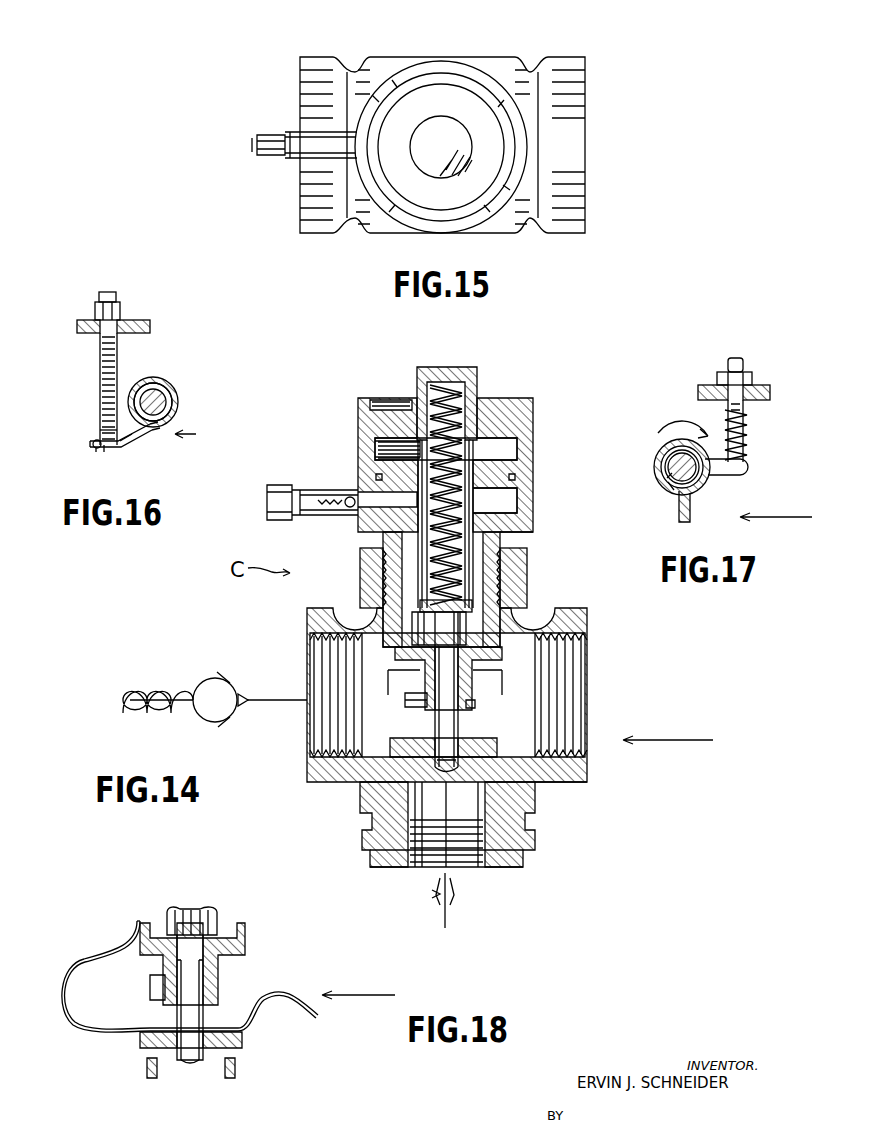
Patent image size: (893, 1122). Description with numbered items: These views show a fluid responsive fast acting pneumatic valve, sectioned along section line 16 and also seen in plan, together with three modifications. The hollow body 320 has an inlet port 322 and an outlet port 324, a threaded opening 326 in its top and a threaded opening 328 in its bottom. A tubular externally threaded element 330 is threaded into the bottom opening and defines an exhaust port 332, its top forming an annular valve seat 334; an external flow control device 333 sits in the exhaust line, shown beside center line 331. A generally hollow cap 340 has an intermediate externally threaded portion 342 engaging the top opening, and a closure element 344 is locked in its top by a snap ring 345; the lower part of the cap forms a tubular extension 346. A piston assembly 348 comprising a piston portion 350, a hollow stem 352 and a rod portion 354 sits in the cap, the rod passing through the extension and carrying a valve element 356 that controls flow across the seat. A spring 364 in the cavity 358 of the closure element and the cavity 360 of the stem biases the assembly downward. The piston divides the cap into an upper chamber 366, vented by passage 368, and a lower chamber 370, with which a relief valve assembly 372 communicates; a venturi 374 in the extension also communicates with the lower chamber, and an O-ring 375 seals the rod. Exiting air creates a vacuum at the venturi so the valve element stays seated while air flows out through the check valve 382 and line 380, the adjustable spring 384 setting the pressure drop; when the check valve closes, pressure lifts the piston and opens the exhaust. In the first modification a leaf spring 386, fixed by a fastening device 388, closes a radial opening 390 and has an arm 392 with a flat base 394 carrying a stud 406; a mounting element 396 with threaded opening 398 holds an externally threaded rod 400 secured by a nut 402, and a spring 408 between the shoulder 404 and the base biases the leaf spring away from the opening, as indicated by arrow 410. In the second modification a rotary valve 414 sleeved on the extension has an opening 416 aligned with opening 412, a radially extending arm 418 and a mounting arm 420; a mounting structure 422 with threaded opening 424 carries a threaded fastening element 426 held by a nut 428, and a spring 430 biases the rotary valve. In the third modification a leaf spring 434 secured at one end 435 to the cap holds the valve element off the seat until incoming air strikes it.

In FIG. 14, the section line 16— 16 is at (449, 688).
In FIG. 15, the hollow body 320 is at (580, 186).
In FIG. 14, the hollow body 320 is at (312, 609).
In FIG. 14, the inlet port 322 is at (590, 655).
In FIG. 14, the outlet port 324 is at (310, 642).
In FIG. 14, the threaded opening 326 is at (522, 573).
In FIG. 14, the threaded opening 328 is at (522, 825).
In FIG. 14, the tubular externally threaded element 330 is at (372, 855).
In FIG. 14, the center line 331 is at (440, 882).
In FIG. 14, the exhaust port 332 is at (478, 870).
In FIG. 14, the external flow control device 333 is at (440, 905).
In FIG. 18, the annular valve seat 334 is at (232, 1062).
In FIG. 14, the annular valve seat 334 is at (527, 785).
In FIG. 14, the hollow cap 340 is at (520, 540).
In FIG. 18, the intermediate externally threaded portion 342 is at (245, 943).
In FIG. 14, the intermediate externally threaded portion 342 is at (372, 565).
In FIG. 15, the closure element 344 is at (425, 118).
In FIG. 14, the closure element 344 is at (478, 395).
In FIG. 14, the snap ring 345 is at (378, 400).
In FIG. 15, the tubular extension 346 is at (448, 77).
In FIG. 16, the tubular extension 346 is at (175, 392).
In FIG. 17, the tubular extension 346 is at (710, 485).
In FIG. 14, the tubular extension 346 is at (472, 705).
In FIG. 14, the piston assembly 348 is at (517, 475).
In FIG. 14, the piston portion 350 is at (378, 468).
In FIG. 14, the hollow stem 352 is at (474, 593).
In FIG. 16, the rod portion 354 is at (180, 403).
In FIG. 17, the rod portion 354 is at (660, 445).
In FIG. 18, the rod portion 354 is at (205, 1018).
In FIG. 14, the rod portion 354 is at (460, 725).
In FIG. 18, the valve element 356 is at (138, 1040).
In FIG. 14, the valve element 356 is at (367, 777).
In FIG. 14, the cavity 358 is at (418, 382).
In FIG. 14, the cavity 360 is at (425, 543).
In FIG. 14, the spring 364 is at (517, 447).
In FIG. 14, the upper chamber 366 is at (375, 440).
In FIG. 14, the passage 368 is at (378, 447).
In FIG. 14, the lower chamber 370 is at (520, 507).
In FIG. 14, the relief valve assembly 372 is at (300, 482).
In FIG. 14, the venturi 374 is at (412, 702).
In FIG. 14, the O-ring 375 is at (438, 768).
In FIG. 14, the line 380 is at (300, 702).
In FIG. 14, the check valve 382 is at (208, 678).
In FIG. 14, the adjustable spring 384 is at (150, 708).
In FIG. 16, the leaf spring 386 is at (150, 381).
In FIG. 16, the fastening device 388 is at (108, 402).
In FIG. 16, the radially extending opening 390 is at (156, 428).
In FIG. 16, the arm 392 is at (138, 448).
In FIG. 16, the flat base 394 is at (95, 449).
In FIG. 16, the mounting element 396 is at (82, 322).
In FIG. 16, the internally threaded opening 398 is at (122, 312).
In FIG. 16, the externally threaded rod 400 is at (100, 342).
In FIG. 16, the nut 402 is at (100, 295).
In FIG. 16, the shoulder 404 is at (100, 352).
In FIG. 16, the stud 406 is at (100, 440).
In FIG. 16, the spring 408 is at (117, 412).
In FIG. 16, the direction arrow 410 is at (196, 434).
In FIG. 17, the direction arrow 410 is at (762, 518).
In FIG. 18, the direction arrow 410 is at (360, 994).
In FIG. 17, the radially extending opening 412 is at (662, 472).
In FIG. 17, the rotary valve 414 is at (658, 455).
In FIG. 17, the radially extending opening 416 is at (672, 487).
In FIG. 17, the radially extending arm 418 is at (692, 512).
In FIG. 17, the mounting arm 420 is at (746, 472).
In FIG. 17, the mounting structure 422 is at (760, 398).
In FIG. 17, the internally threaded opening 424 is at (745, 372).
In FIG. 17, the externally threaded fastening element 426 is at (732, 360).
In FIG. 17, the nut 428 is at (718, 375).
In FIG. 17, the spring 430 is at (746, 455).
In FIG. 18, the leaf spring 434 is at (72, 982).
In FIG. 18, the end 435 is at (137, 925).